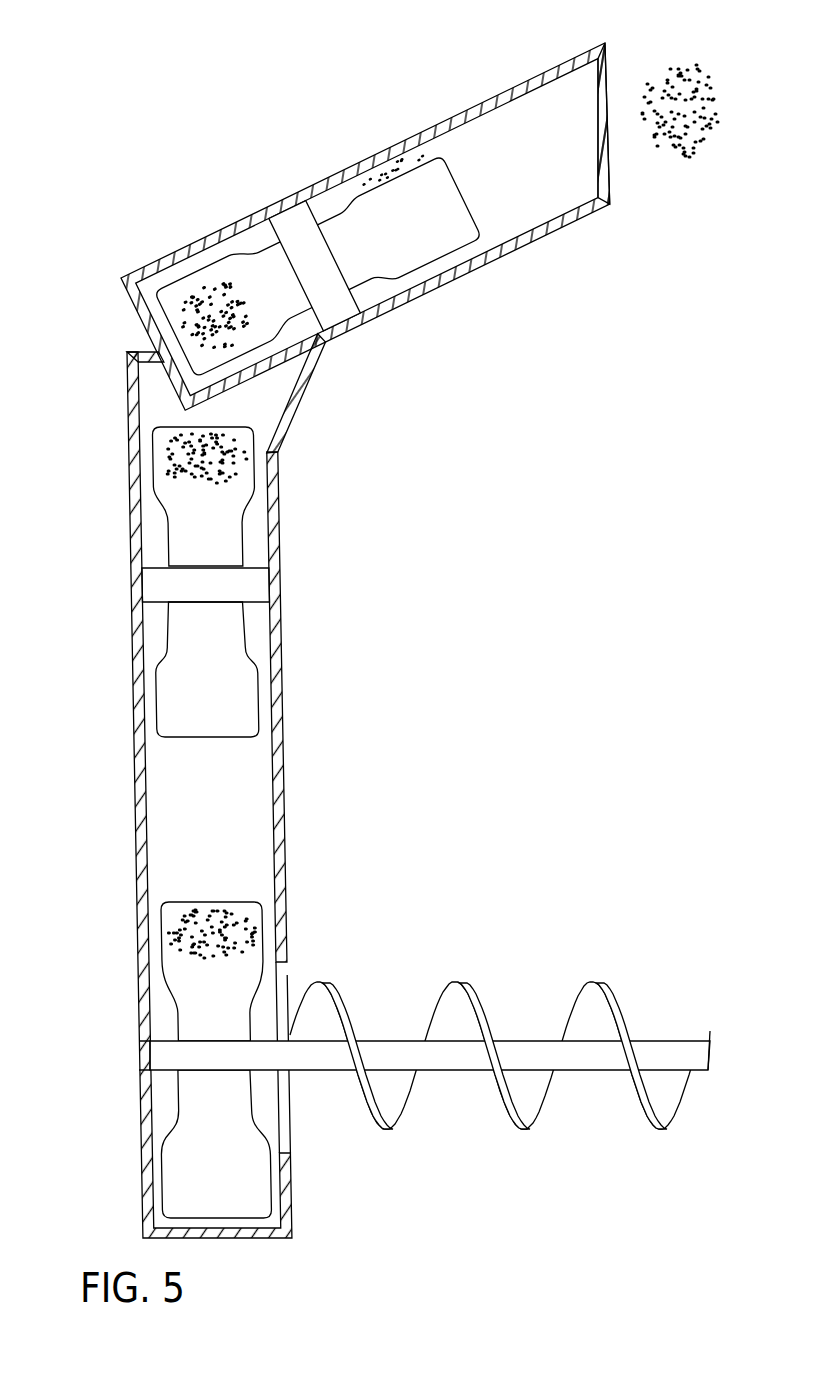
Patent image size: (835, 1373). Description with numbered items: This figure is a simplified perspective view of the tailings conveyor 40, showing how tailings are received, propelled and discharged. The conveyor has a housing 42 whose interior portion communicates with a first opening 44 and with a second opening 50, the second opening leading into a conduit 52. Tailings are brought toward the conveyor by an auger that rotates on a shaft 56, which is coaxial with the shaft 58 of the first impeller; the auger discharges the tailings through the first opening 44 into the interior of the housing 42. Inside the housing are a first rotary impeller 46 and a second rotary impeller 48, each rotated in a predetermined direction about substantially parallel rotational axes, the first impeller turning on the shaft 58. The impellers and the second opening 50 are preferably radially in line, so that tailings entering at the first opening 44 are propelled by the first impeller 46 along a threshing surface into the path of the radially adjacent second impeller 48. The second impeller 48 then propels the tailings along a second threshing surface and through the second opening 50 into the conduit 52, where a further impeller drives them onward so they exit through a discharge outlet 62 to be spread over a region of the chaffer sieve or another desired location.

The tailings conveyor 40 is at (85, 394).
The housing 42 is at (278, 508).
The first opening 44 is at (290, 973).
The first rotary impeller 46 is at (178, 968).
The second rotary impeller 48 is at (167, 493).
The second opening 50 is at (277, 363).
The conduit 52 is at (490, 135).
The shaft 56 is at (522, 1038).
The shaft 58 is at (142, 1063).
The discharge outlet 62 is at (604, 125).